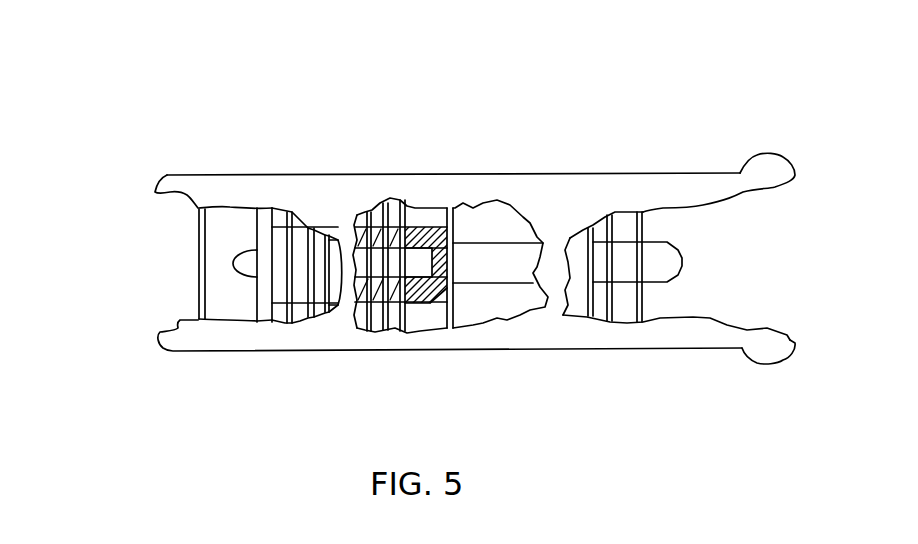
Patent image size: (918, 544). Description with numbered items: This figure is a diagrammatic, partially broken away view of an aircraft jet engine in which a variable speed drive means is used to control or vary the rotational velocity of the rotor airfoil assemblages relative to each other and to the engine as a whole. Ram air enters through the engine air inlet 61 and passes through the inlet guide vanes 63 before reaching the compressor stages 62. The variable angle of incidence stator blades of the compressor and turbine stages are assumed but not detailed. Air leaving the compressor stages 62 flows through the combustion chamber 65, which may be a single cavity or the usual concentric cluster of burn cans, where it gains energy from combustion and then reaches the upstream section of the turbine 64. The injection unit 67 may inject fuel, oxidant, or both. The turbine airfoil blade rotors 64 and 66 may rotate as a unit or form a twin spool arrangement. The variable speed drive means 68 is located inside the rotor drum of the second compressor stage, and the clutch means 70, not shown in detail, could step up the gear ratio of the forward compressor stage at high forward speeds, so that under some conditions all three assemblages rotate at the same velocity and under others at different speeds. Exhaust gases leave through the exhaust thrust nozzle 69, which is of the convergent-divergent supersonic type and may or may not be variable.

The engine air inlet 61 is at (152, 258).
The compressor stages 62 is at (285, 215).
The inlet guide vanes 63 is at (199, 281).
The turbine 64 is at (588, 292).
The combustion chamber 65 is at (517, 230).
The turbine airfoil blade rotor 66 is at (600, 312).
The injection unit 67 is at (645, 220).
The variable speed drive means 68 is at (430, 240).
The exhaust thrust nozzle 69 is at (747, 355).
The clutch means 70 is at (345, 293).